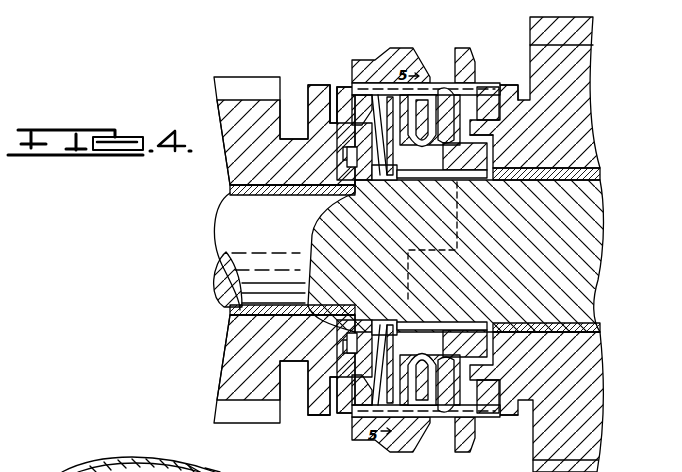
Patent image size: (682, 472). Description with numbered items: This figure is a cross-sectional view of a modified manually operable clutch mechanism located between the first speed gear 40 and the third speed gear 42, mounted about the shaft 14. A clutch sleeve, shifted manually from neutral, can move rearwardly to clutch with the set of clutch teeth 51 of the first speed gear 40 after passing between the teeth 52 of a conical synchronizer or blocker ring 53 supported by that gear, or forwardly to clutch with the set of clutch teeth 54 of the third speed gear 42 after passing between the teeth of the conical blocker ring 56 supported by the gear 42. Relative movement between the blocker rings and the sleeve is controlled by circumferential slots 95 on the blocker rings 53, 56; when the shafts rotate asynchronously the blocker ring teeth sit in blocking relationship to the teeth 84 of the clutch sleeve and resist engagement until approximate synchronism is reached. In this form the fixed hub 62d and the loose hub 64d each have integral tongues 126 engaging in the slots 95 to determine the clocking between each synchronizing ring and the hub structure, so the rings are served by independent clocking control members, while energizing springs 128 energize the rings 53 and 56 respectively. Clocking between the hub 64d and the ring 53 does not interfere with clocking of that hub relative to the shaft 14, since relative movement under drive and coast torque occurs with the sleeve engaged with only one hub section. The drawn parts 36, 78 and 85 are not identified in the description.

The shaft 14 is at (583, 214).
The first speed gear 40 is at (583, 26).
The third speed gear 42 is at (238, 86).
The blocker ring 56 is at (334, 88).
The bearing support 36 is at (345, 122).
The integral tongues 126 is at (375, 100).
The energizing springs 128 is at (387, 102).
The loose hub 64d is at (432, 100).
The fixed hub 62d is at (440, 158).
The teeth 52 is at (487, 87).
The blocker ring 53 is at (502, 118).
The circumferential slots 95 is at (492, 134).
The clutch teeth 54 is at (318, 414).
The clutch teeth 51 is at (510, 414).
The gear ring 78 is at (175, 470).
The teeth 84 is at (215, 450).
The tooth flank 85 is at (217, 471).